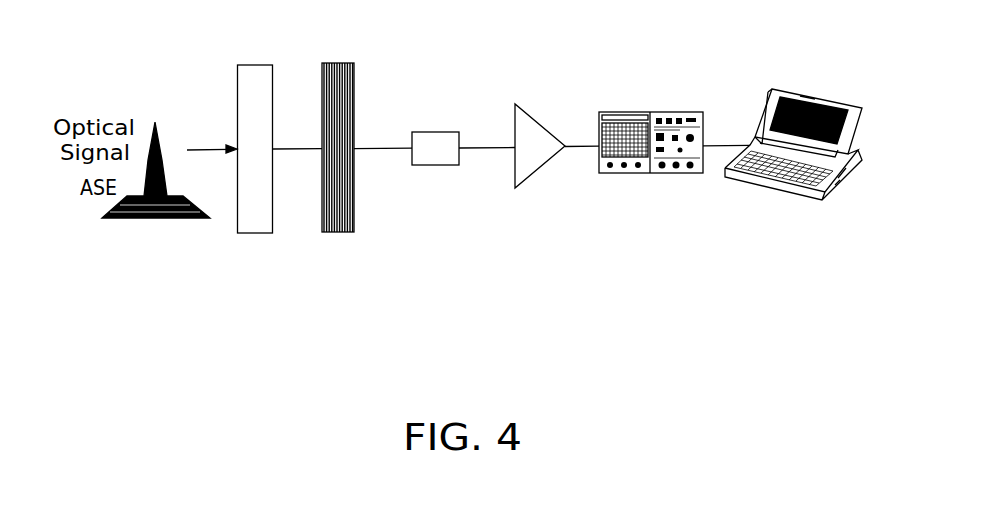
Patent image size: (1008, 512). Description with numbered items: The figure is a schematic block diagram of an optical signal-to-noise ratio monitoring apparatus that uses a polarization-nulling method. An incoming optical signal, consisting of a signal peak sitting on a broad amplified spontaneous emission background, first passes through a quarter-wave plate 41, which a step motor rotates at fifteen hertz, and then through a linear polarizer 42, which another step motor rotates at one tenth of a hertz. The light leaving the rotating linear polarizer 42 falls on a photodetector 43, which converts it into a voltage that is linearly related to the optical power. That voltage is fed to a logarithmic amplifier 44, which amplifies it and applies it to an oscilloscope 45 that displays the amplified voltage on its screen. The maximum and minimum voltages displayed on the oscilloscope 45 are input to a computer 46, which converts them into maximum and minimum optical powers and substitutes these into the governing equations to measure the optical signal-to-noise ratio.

The quarter-wave plate 41 is at (256, 226).
The linear polarizer 42 is at (336, 233).
The photodetector 43 is at (435, 166).
The logarithmic amplifier 44 is at (542, 167).
The oscilloscope 45 is at (670, 175).
The computer 46 is at (798, 190).